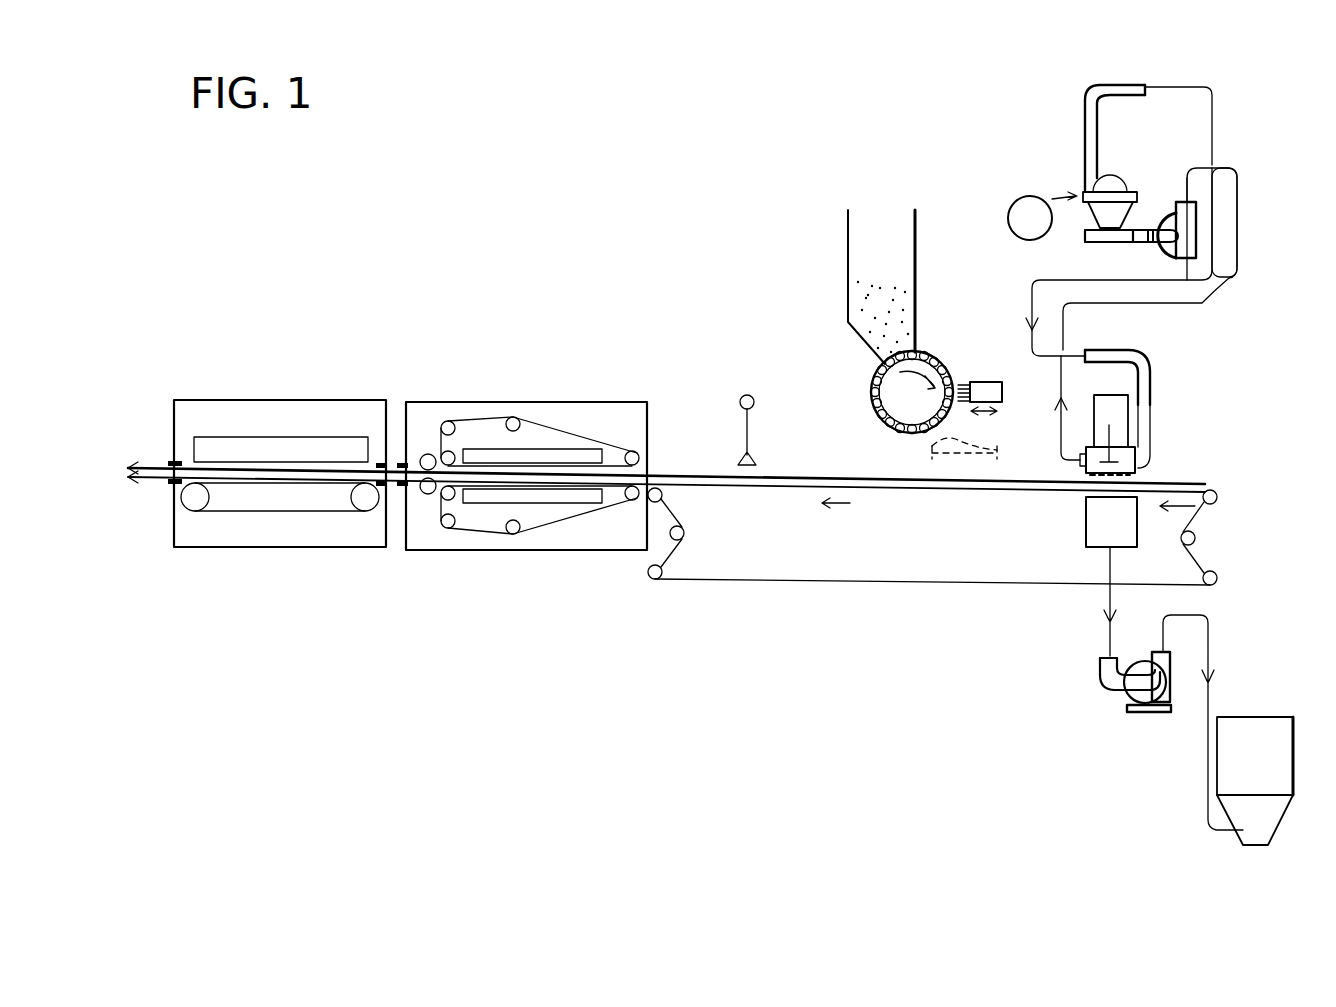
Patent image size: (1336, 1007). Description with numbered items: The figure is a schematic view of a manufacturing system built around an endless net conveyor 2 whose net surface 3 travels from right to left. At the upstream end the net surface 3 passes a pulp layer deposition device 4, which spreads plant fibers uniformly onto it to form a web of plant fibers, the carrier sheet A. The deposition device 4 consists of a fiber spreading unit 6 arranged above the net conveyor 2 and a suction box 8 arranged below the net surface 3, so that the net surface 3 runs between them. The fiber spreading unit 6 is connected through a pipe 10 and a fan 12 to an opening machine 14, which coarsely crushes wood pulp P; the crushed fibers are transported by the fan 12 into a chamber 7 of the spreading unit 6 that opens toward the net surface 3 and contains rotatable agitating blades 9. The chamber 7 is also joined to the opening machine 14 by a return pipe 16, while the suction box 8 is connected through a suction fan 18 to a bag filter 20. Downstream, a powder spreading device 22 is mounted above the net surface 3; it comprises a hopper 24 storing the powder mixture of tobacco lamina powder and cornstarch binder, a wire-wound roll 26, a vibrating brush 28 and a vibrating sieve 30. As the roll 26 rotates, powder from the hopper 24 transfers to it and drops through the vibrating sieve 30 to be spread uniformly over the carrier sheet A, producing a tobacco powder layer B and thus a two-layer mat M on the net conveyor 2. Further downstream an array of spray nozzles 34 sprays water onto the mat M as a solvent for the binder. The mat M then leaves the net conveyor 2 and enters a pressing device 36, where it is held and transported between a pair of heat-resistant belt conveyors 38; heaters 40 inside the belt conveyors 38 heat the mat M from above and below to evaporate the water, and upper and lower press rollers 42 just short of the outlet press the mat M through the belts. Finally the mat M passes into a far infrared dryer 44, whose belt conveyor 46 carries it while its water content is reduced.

The net conveyor 2 is at (859, 618).
The net surface 3 is at (1062, 489).
The pulp layer deposition device 4 is at (1233, 412).
The fiber spreading unit 6 is at (1140, 464).
The chamber 7 is at (1085, 478).
The suction box 8 is at (1092, 549).
The agitating blades 9 is at (1133, 448).
The pipe 10 is at (1152, 370).
The fan 12 is at (1168, 216).
The opening machine 14 is at (1117, 182).
The return pipe 16 is at (1065, 332).
The suction fan 18 is at (1172, 686).
The bag filter 20 is at (1265, 716).
The powder spreading device 22 is at (824, 285).
The hopper 24 is at (916, 256).
The roll 26 is at (870, 404).
The vibrating brush 28 is at (987, 380).
The vibrating sieve 30 is at (930, 447).
The spray nozzles 34 is at (740, 452).
The pressing device 36 is at (489, 385).
The belt conveyors 38 is at (604, 455).
The heaters 40 is at (542, 452).
The press rollers 42 is at (428, 453).
The far infrared dryer 44 is at (262, 386).
The belt conveyor 46 is at (282, 512).
The mat M is at (793, 454).
The wood pulp P is at (1009, 206).
The carrier sheet A is at (1140, 487).
The tobacco powder layer B is at (1000, 472).